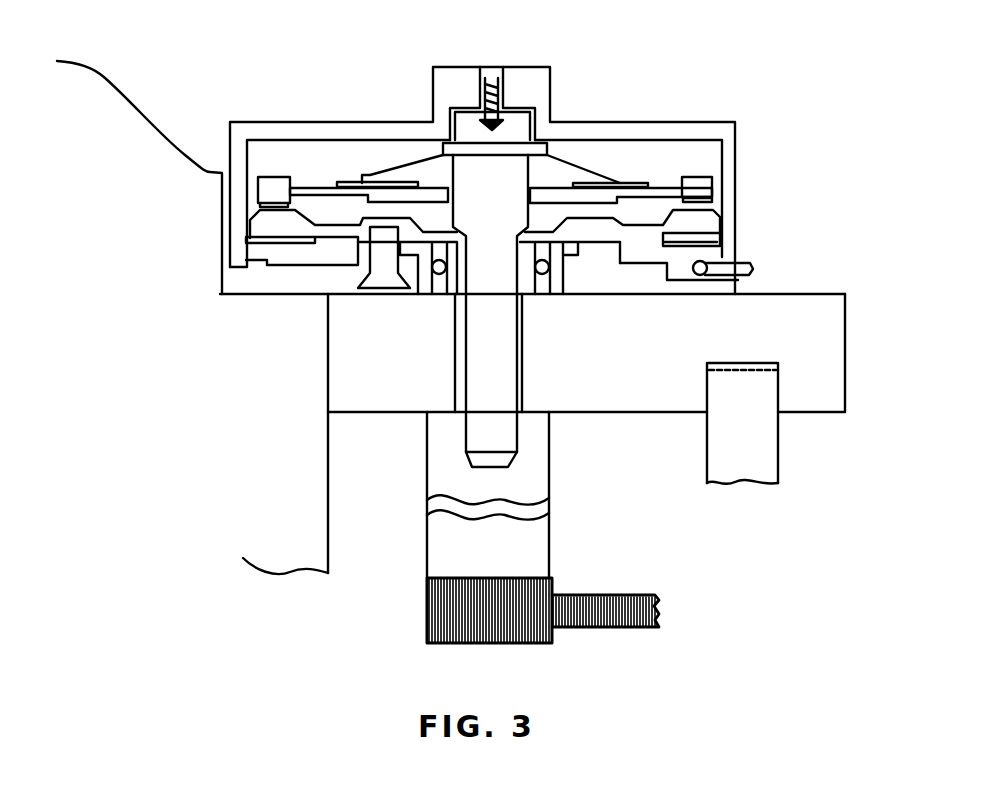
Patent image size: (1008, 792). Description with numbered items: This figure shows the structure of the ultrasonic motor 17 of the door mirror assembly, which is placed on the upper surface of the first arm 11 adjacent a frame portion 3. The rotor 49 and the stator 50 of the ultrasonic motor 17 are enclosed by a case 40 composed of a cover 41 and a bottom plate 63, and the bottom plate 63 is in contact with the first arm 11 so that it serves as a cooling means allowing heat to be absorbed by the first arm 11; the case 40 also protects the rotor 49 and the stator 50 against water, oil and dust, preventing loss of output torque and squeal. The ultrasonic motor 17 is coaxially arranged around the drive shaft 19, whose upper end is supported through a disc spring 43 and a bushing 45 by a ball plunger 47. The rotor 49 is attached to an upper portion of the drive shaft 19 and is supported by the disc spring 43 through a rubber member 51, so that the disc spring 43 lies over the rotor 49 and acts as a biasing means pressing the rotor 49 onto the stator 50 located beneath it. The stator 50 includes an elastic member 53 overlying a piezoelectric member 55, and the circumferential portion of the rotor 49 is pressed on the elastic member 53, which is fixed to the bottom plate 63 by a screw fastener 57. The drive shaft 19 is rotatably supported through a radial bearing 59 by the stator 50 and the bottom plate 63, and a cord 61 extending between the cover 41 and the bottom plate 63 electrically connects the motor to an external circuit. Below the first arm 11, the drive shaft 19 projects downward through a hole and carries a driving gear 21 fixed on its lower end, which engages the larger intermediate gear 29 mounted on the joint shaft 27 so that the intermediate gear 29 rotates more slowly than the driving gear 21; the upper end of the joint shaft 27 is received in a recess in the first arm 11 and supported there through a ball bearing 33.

The frame 3 is at (117, 96).
The first arm 11 is at (843, 358).
The ultrasonic motor 17 is at (746, 62).
The drive shaft 19 is at (519, 356).
The driving gear 21 is at (427, 629).
The joint shaft 27 is at (767, 462).
The intermediate gear 29 is at (623, 630).
The ball bearing 33 is at (770, 366).
The case 40 is at (243, 108).
The cover 41 is at (591, 120).
The disc spring 43 is at (576, 169).
The bushing 45 is at (456, 124).
The ball plunger 47 is at (492, 88).
The rotor 49 is at (712, 190).
The stator 50 is at (787, 248).
The rubber member 51 is at (654, 183).
The elastic member 53 is at (714, 220).
The piezoelectric member 55 is at (714, 245).
The screw fastener 57 is at (386, 290).
The radial bearing 59 is at (550, 268).
The cord 61 is at (748, 271).
The bottom plate 63 is at (298, 295).